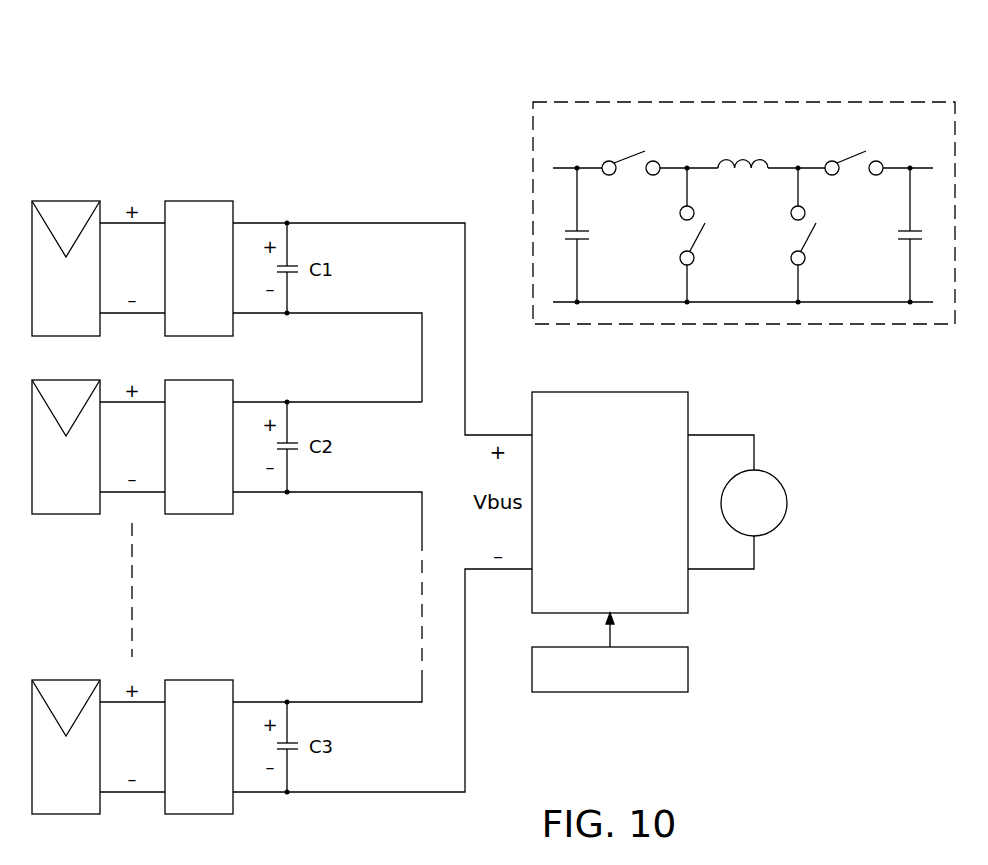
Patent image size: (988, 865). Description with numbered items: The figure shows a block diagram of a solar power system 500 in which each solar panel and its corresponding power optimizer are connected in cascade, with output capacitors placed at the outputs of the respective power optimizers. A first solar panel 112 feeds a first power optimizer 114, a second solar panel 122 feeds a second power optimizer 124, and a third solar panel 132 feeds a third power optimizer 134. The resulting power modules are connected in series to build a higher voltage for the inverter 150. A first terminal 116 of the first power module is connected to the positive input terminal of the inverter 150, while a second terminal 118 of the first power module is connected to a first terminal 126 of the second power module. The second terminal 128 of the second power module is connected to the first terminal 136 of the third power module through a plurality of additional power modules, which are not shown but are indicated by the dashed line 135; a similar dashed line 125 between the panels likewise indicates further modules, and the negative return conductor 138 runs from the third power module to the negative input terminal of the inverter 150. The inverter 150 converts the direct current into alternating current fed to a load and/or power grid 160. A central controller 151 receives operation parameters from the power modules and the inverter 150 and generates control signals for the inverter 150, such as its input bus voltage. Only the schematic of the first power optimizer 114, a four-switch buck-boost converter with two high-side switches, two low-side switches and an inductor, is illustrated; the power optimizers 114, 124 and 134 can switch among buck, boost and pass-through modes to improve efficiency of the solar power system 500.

The solar power system 500 is at (204, 74).
The first solar panel 112 is at (88, 306).
The first power optimizer 114 is at (221, 285).
The first terminal of the first power module 116 is at (353, 222).
The second terminal of the first power module 118 is at (365, 312).
The second solar panel 122 is at (88, 484).
The second power optimizer 124 is at (221, 463).
The additional panels (ellipsis) 125 is at (130, 593).
The first terminal of the second power module 126 is at (353, 401).
The second terminal of the second power module 128 is at (365, 491).
The third solar panel 132 is at (88, 784).
The third power optimizer 134 is at (221, 763).
The dashed line 135 is at (420, 598).
The first terminal of the third power module 136 is at (365, 703).
The negative bus conductor 138 is at (355, 793).
The inverter 150 is at (632, 518).
The central controller 151 is at (690, 668).
The power grid 160 is at (788, 503).